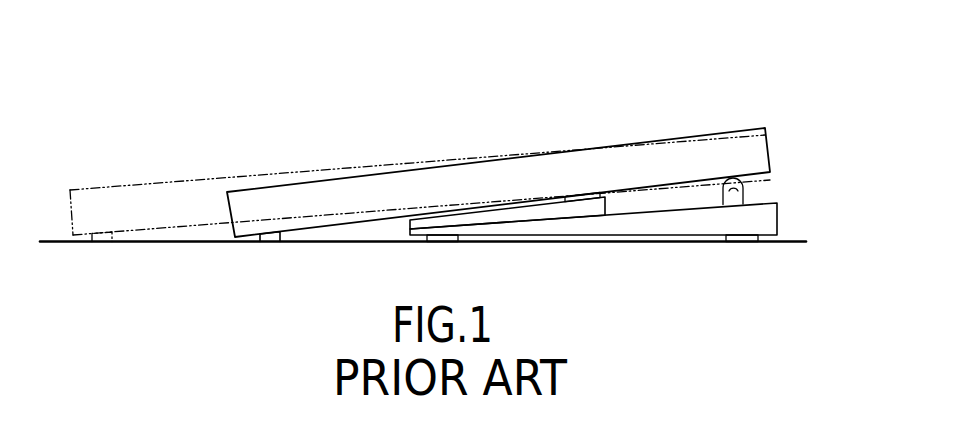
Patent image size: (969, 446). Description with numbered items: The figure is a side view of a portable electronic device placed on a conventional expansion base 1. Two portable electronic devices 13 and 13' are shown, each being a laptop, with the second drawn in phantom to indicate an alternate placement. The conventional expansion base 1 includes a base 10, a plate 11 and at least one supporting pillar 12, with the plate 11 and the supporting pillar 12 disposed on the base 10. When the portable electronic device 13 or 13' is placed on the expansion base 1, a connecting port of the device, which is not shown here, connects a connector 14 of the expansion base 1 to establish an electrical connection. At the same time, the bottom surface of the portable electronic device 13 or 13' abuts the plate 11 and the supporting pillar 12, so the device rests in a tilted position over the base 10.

The expansion base 1 is at (790, 219).
The base 10 is at (665, 225).
The plate 11 is at (587, 207).
The supporting pillar 12 is at (743, 193).
The portable electronic device 13 is at (498, 150).
The portable electronic device 13' is at (420, 177).
The connector 14 is at (583, 196).